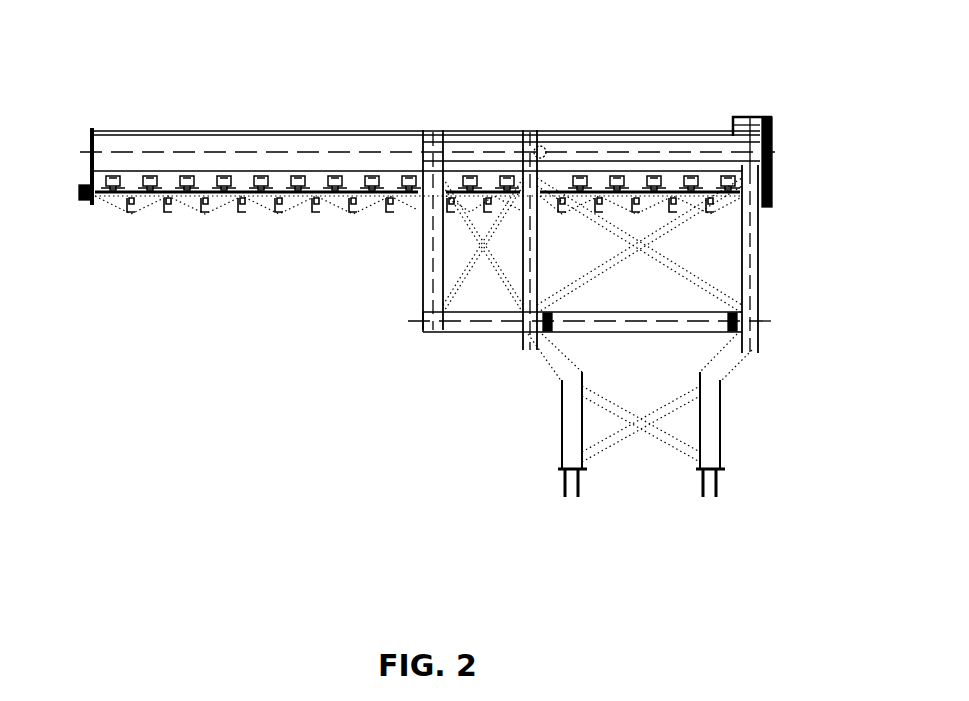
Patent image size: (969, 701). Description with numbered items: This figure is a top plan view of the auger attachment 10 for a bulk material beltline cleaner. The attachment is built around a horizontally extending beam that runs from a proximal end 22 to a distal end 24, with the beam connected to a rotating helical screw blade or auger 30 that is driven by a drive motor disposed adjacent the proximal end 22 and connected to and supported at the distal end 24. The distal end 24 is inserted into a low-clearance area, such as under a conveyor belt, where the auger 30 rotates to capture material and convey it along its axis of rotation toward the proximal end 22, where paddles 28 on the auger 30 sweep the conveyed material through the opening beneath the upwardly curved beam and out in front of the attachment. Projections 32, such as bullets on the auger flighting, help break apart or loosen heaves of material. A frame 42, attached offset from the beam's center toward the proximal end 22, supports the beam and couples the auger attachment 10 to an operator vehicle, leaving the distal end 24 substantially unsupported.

The auger attachment 10 is at (322, 373).
The proximal end 22 is at (745, 118).
The distal end 24 is at (103, 137).
The paddles 28 is at (672, 188).
The auger 30 is at (254, 198).
The projections 32 is at (197, 200).
The frame 42 is at (707, 273).